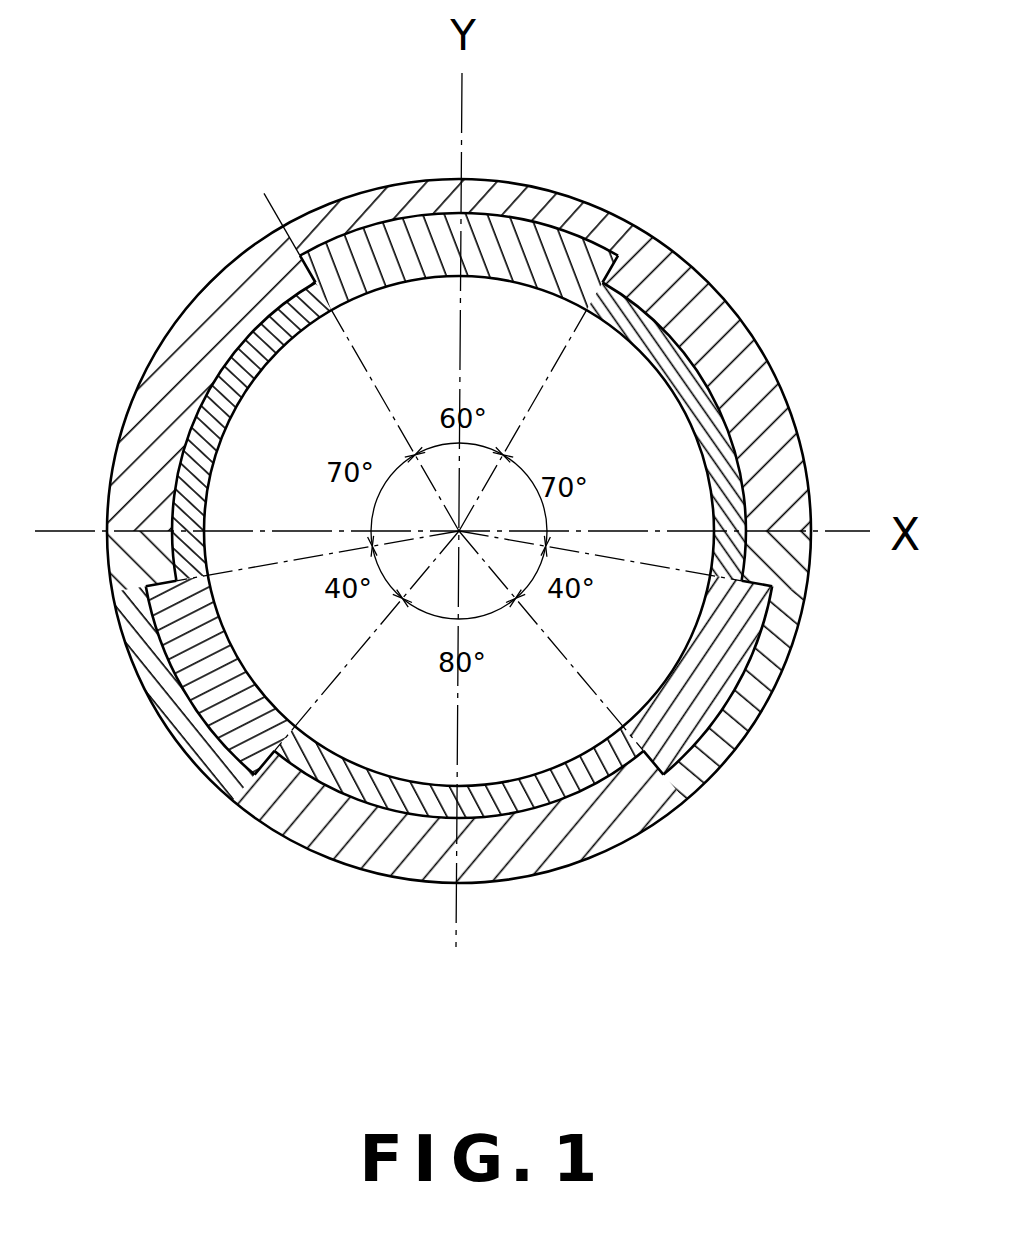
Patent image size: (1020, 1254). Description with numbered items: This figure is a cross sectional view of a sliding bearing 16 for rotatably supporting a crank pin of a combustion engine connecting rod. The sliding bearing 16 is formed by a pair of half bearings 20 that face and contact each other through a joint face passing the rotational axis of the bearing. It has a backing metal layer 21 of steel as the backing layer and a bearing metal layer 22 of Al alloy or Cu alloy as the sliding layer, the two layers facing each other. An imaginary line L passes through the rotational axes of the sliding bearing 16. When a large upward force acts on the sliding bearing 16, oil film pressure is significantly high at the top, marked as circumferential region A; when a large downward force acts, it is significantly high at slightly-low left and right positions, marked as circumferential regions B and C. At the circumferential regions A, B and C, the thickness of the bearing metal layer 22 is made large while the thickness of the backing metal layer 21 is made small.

The sliding bearing 16 is at (667, 228).
The half bearings 20 is at (737, 307).
The backing metal layer 21 is at (235, 257).
The bearing metal layer 22 is at (715, 415).
The circumferential region A is at (543, 190).
The circumferential region B is at (153, 713).
The circumferential region C is at (780, 700).
The imaginary line L is at (463, 108).